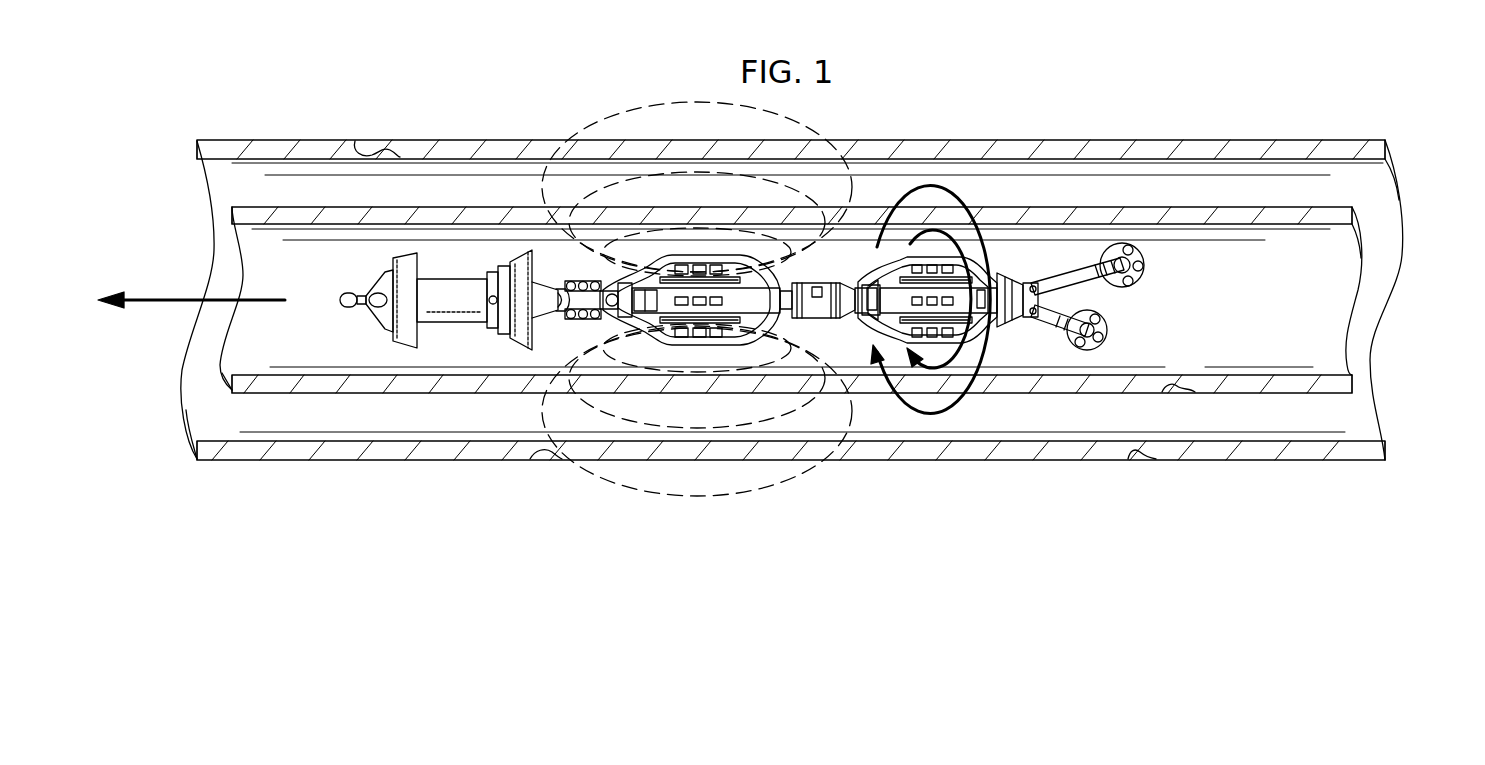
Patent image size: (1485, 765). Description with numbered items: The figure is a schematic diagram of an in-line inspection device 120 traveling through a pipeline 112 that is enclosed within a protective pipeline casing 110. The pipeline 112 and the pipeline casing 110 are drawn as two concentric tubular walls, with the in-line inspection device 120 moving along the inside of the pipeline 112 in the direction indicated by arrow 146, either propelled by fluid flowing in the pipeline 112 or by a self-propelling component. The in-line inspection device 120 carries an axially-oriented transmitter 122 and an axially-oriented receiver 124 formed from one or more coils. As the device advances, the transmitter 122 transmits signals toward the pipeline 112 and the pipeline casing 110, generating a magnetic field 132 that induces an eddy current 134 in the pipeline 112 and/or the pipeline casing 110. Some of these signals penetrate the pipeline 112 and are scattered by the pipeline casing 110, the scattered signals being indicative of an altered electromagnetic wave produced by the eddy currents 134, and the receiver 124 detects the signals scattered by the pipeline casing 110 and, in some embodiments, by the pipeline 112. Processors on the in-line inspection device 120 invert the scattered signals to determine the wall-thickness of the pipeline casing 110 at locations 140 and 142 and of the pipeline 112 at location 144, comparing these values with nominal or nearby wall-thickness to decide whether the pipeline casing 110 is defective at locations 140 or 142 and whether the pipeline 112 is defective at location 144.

The pipeline casing 110 is at (1393, 221).
The pipeline 112 is at (1325, 342).
The in-line inspection device 120 is at (742, 301).
The transmitter 122 is at (545, 354).
The receiver 124 is at (957, 243).
The magnetic field 132 is at (649, 522).
The eddy current 134 is at (957, 364).
The location of pipeline casing 140 is at (368, 124).
The location of pipeline casing 142 is at (1145, 482).
The location of pipeline 144 is at (1188, 352).
The arrow 146 is at (146, 297).